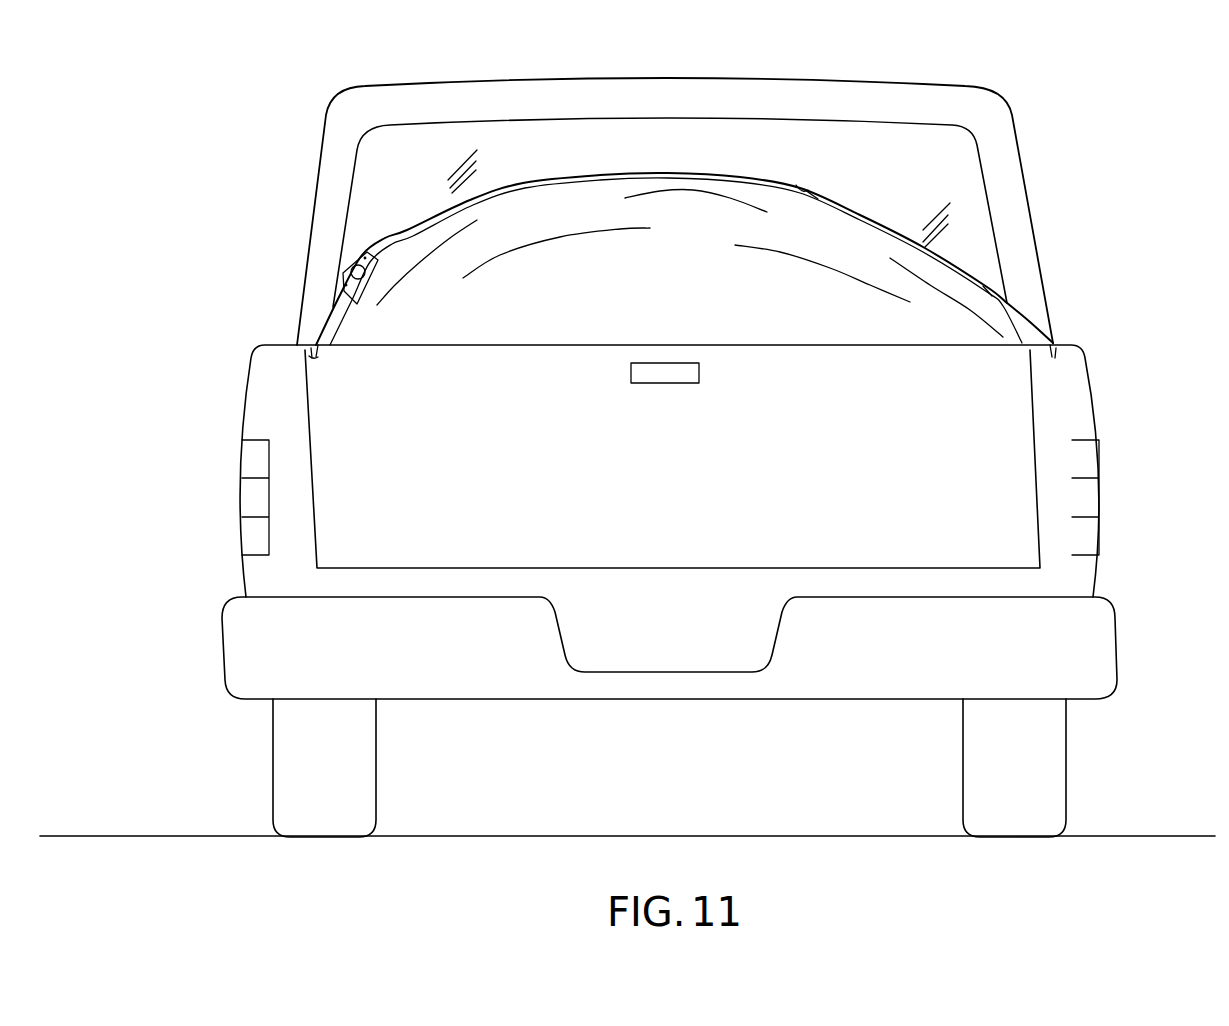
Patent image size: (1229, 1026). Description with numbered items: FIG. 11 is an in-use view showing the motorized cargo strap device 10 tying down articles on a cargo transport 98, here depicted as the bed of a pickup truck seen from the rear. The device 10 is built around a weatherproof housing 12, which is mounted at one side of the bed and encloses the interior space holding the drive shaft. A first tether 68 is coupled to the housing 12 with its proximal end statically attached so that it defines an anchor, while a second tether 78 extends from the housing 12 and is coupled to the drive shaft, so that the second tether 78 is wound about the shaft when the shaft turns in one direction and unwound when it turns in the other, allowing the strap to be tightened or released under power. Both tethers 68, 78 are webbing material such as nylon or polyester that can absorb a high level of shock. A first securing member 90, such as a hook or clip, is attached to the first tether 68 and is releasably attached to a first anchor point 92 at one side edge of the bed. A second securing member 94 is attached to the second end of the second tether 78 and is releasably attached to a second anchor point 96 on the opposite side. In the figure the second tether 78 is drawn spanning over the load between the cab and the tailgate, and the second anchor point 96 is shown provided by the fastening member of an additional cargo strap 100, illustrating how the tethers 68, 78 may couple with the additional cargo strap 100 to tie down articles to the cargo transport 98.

The motorized cargo strap device 10 is at (222, 145).
The housing 12 is at (650, 216).
The first tether 68 is at (332, 307).
The second tether 78 is at (577, 184).
The first securing member 90 is at (318, 345).
The first anchor point 92 is at (309, 356).
The second securing member 94 is at (798, 188).
The second anchor point 96 is at (815, 198).
The cargo transport 98 is at (932, 468).
The additional cargo strap 100 is at (988, 289).